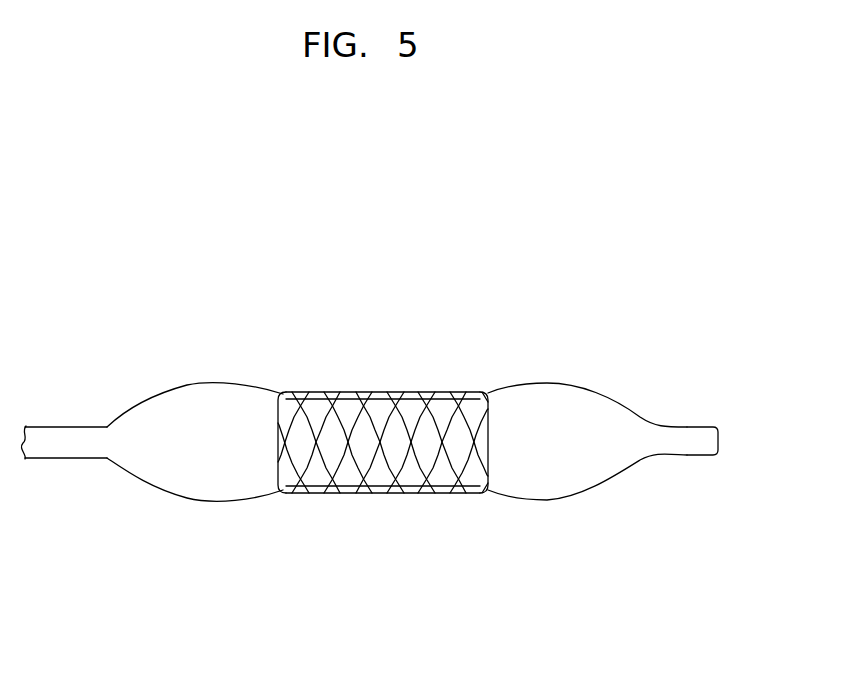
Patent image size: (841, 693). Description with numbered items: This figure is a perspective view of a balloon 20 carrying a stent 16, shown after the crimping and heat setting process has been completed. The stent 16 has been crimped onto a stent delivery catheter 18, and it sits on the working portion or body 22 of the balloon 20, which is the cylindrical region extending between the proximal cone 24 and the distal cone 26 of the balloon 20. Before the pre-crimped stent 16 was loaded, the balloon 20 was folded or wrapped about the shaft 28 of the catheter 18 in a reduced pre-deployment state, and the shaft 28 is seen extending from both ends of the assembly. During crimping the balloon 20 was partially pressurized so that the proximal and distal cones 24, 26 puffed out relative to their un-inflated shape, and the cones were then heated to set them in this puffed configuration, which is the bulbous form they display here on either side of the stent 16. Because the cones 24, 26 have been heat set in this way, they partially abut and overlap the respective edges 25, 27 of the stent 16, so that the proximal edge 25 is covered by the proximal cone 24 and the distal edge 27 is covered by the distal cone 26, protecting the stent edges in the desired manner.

The stent 16 is at (420, 392).
The stent delivery catheter 18 is at (690, 426).
The balloon 20 is at (387, 420).
The working portion or body of the balloon 22 is at (387, 492).
The proximal cone 24 is at (183, 486).
The edge of the stent 25 is at (283, 395).
The distal cone 26 is at (575, 488).
The edge of the stent 27 is at (495, 395).
The shaft 28 is at (68, 427).